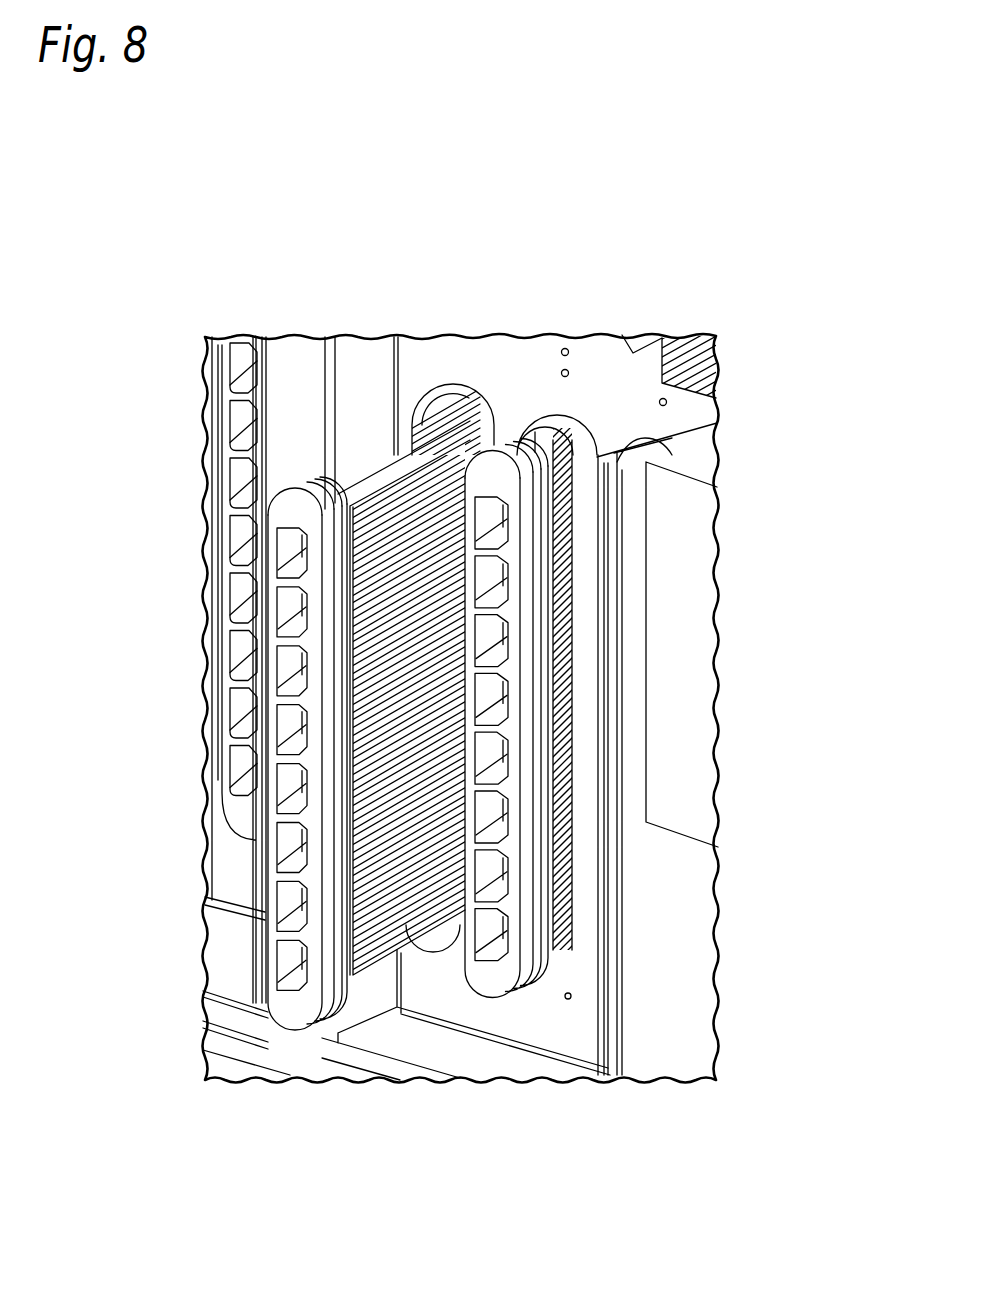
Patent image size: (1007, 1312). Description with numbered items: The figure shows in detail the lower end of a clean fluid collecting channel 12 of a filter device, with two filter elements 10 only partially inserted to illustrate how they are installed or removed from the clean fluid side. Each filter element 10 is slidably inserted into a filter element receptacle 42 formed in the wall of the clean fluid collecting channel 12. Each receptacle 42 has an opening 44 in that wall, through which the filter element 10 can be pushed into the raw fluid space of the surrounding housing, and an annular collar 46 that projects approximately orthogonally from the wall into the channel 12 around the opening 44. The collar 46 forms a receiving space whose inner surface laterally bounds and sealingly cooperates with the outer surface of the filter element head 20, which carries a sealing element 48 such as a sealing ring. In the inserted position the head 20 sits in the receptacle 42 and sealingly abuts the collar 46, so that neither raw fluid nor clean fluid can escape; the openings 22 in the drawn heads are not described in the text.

The filter element 10 is at (281, 1039).
The clean fluid collecting channel 12 is at (408, 1033).
The filter element head 20 is at (272, 692).
The openings 22 is at (300, 847).
The filter element receptacle 42 is at (584, 980).
The opening 44 is at (572, 944).
The annular collar 46 is at (585, 838).
The sealing element 48 is at (505, 448).